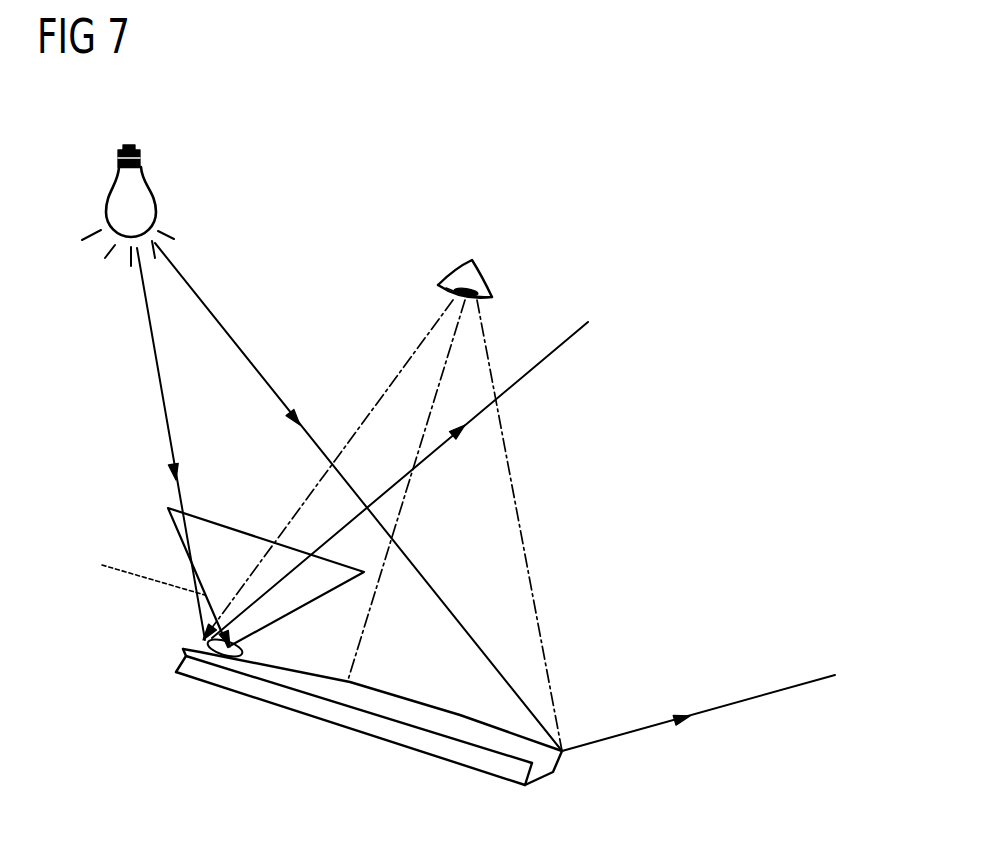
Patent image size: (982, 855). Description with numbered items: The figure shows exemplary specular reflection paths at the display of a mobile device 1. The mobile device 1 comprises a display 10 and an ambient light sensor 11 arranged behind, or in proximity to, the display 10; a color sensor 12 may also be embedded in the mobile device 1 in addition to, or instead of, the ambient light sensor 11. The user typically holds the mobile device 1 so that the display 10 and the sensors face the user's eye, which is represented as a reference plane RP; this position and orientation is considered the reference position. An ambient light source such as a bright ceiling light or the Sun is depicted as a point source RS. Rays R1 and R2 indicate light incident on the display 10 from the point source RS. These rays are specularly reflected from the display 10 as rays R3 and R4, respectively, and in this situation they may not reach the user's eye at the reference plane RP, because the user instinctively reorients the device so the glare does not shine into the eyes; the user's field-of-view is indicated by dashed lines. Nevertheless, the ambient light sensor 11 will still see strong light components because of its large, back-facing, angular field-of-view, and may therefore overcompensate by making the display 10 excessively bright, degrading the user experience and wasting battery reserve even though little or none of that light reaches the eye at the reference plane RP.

The point source RS is at (106, 216).
The reference plane RP is at (492, 292).
The ray R1 is at (156, 372).
The ray R2 is at (270, 386).
The ray R3 is at (532, 371).
The ray R4 is at (646, 726).
The display 10 is at (388, 690).
The ambient light sensor 11 is at (229, 584).
The color sensor 12 is at (200, 600).
The mobile device 1 is at (380, 730).